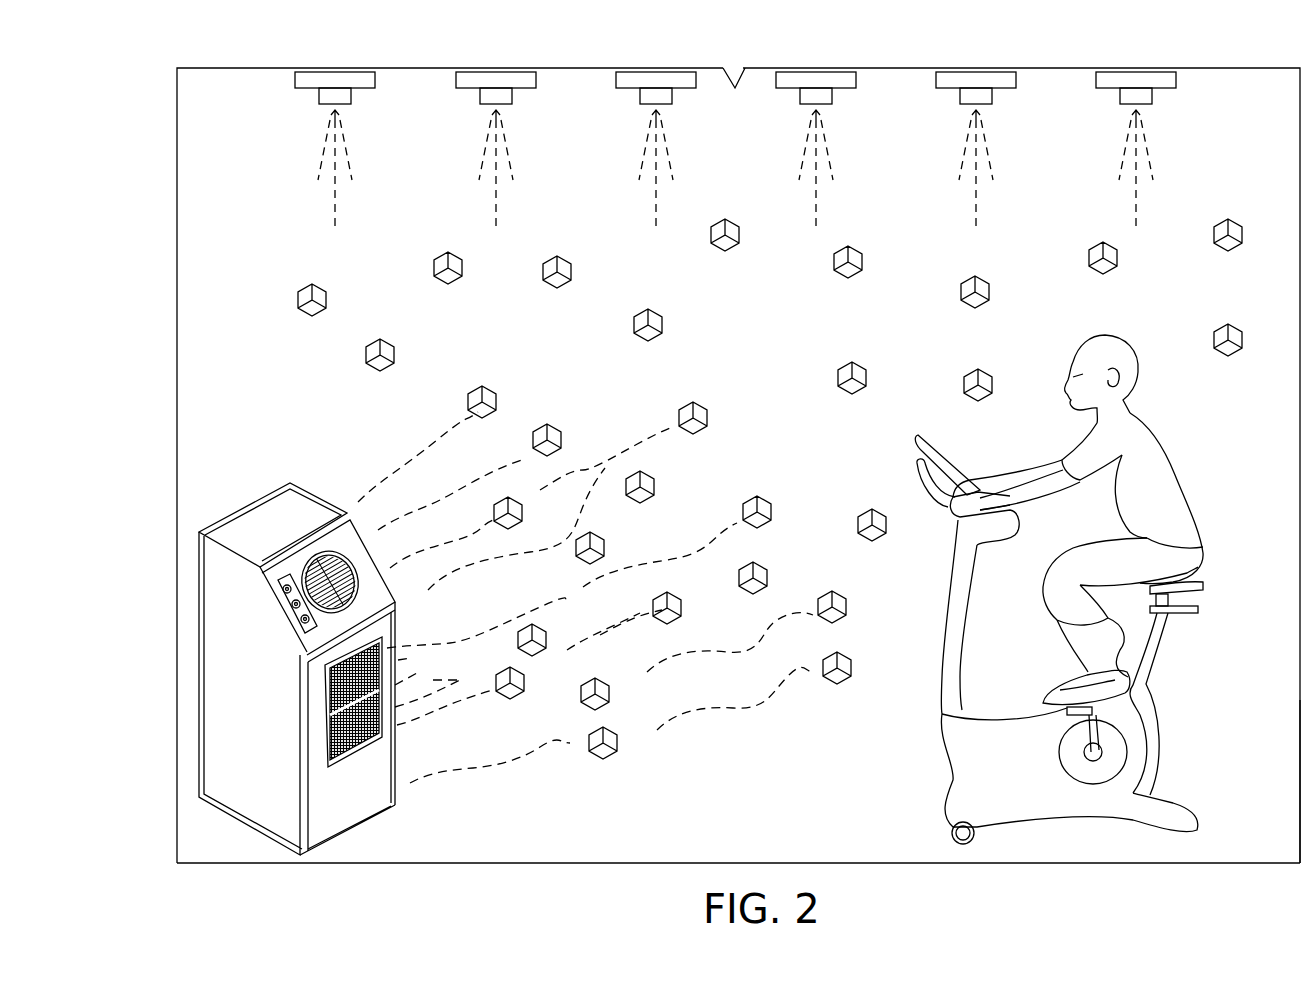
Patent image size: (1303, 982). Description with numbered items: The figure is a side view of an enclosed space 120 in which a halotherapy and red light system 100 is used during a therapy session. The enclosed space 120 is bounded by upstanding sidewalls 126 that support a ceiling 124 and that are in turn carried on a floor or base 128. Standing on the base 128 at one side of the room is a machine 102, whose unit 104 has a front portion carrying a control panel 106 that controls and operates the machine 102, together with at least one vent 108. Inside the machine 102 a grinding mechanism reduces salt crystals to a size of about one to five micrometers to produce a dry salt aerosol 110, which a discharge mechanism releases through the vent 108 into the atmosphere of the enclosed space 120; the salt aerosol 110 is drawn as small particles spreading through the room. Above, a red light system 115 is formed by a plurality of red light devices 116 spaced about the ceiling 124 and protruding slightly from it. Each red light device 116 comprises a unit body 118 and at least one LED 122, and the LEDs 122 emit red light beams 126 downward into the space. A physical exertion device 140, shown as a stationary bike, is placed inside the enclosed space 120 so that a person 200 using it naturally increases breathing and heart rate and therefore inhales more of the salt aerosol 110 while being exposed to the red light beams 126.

The halotherapy and red light system 100 is at (703, 434).
The machine 102 is at (333, 669).
The unit 104 is at (391, 832).
The control panel 106 is at (287, 598).
The vent 108 is at (312, 558).
The salt aerosol 110 is at (722, 248).
The red light system 115 is at (262, 163).
The red light device 116 is at (507, 63).
The unit body 118 is at (660, 84).
The enclosed space 120 is at (827, 802).
The LED 122 is at (507, 106).
The ceiling 124 is at (745, 68).
The red light beams 126 is at (672, 160).
The base 128 is at (666, 862).
The physical exertion device 140 is at (1184, 743).
The person 200 is at (1186, 449).